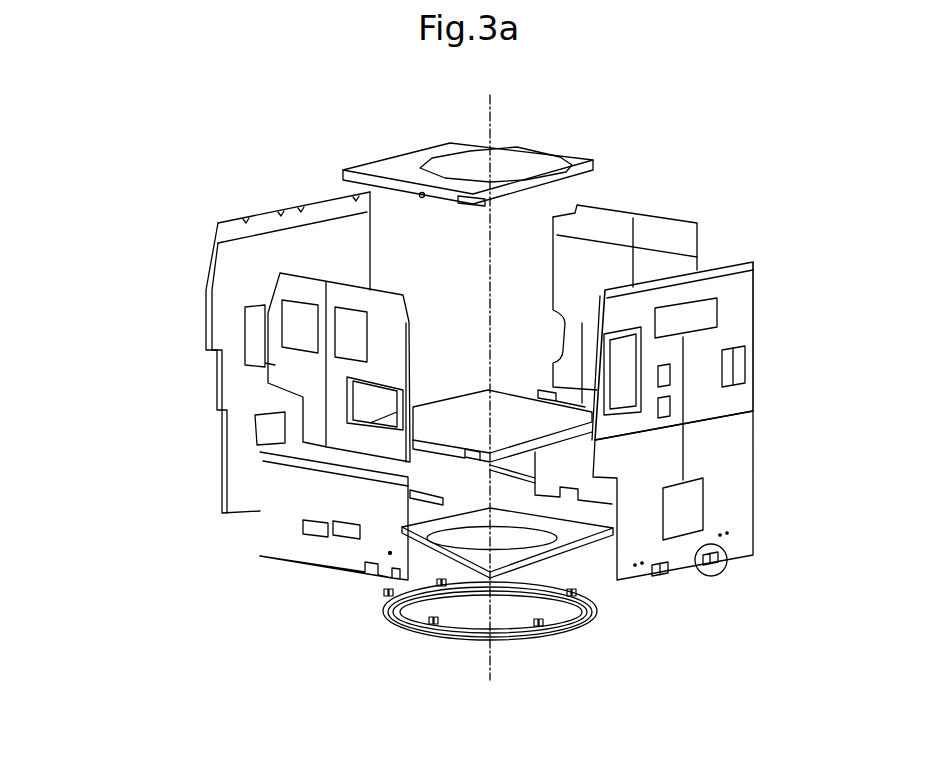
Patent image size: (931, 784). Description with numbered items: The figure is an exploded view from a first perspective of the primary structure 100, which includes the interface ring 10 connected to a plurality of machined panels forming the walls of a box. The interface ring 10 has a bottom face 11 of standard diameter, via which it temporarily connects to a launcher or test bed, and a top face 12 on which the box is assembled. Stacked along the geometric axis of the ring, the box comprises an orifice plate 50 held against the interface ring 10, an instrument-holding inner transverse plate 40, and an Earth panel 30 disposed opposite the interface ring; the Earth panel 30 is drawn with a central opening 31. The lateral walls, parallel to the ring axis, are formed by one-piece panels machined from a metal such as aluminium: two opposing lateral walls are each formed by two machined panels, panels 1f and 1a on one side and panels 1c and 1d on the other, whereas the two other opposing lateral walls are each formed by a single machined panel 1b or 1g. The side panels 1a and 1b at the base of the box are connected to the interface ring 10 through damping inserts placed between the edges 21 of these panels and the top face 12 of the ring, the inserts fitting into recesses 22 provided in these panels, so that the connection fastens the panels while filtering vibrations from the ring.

The primary structure 100 is at (121, 185).
The Earth panel 30 is at (413, 163).
The opening in top plate 31 is at (512, 173).
The machined panel 1a is at (260, 478).
The machined panel 1b is at (757, 400).
The machined panel 1c is at (697, 245).
The machined panel 1d is at (757, 307).
The machined panel 1f is at (273, 365).
The machined panel 1g is at (207, 283).
The edges of the side panels 21 is at (245, 516).
The recesses 22 is at (728, 560).
The instrument-holding inner transverse plate 40 is at (447, 405).
The orifice plate 50 is at (560, 562).
The interface ring 10 is at (393, 622).
The bottom face 11 is at (510, 641).
The top face 12 is at (540, 624).